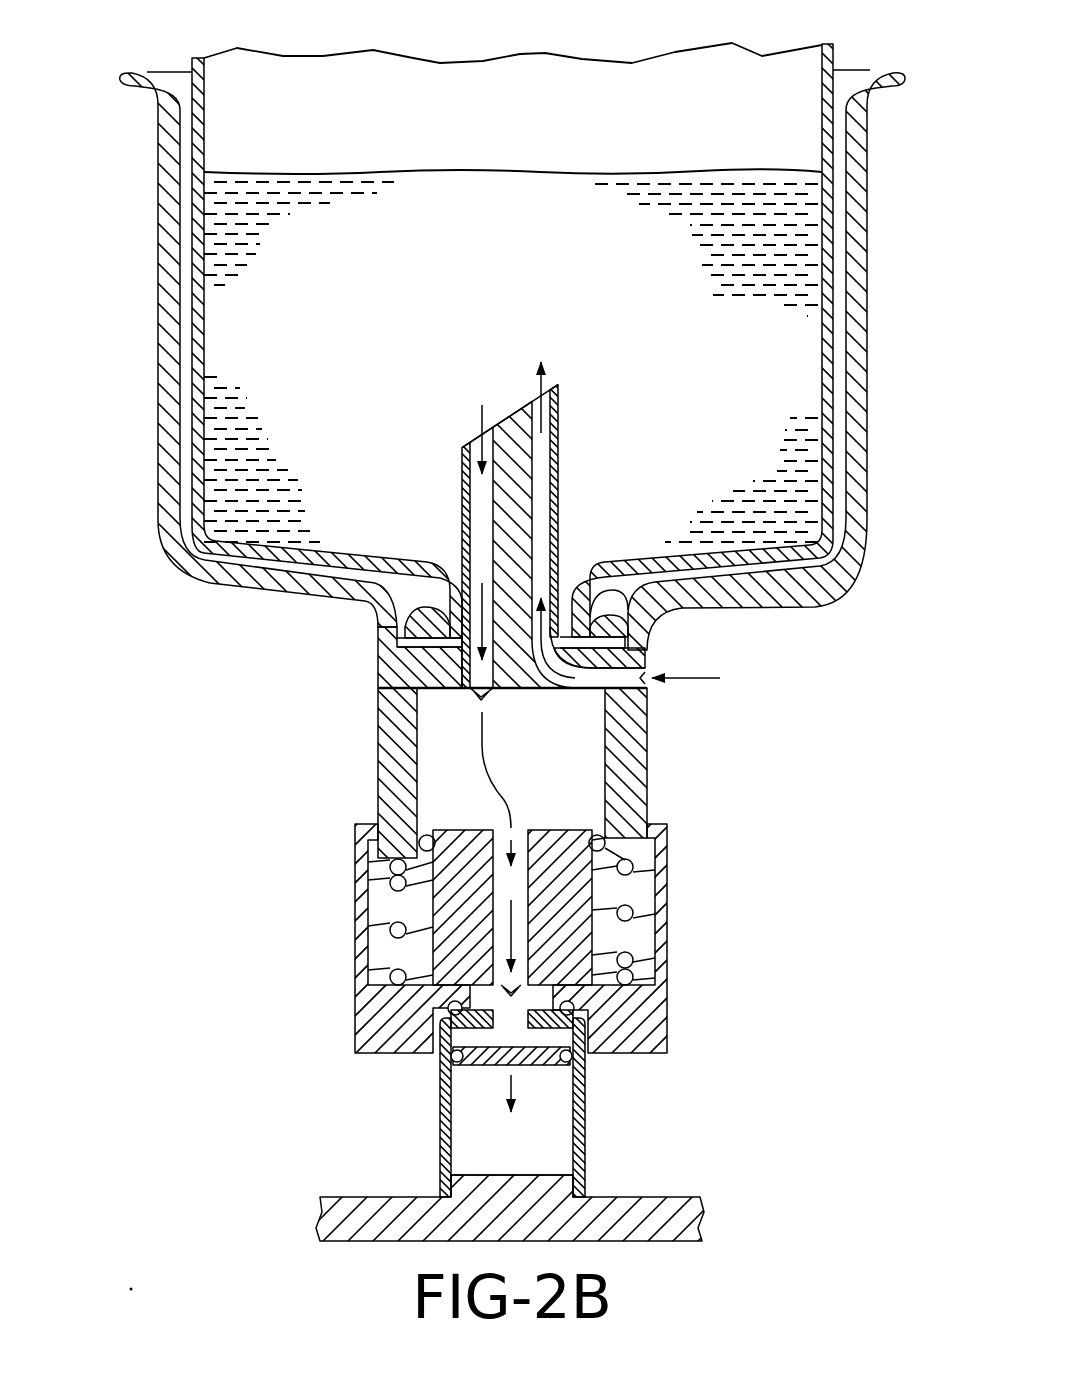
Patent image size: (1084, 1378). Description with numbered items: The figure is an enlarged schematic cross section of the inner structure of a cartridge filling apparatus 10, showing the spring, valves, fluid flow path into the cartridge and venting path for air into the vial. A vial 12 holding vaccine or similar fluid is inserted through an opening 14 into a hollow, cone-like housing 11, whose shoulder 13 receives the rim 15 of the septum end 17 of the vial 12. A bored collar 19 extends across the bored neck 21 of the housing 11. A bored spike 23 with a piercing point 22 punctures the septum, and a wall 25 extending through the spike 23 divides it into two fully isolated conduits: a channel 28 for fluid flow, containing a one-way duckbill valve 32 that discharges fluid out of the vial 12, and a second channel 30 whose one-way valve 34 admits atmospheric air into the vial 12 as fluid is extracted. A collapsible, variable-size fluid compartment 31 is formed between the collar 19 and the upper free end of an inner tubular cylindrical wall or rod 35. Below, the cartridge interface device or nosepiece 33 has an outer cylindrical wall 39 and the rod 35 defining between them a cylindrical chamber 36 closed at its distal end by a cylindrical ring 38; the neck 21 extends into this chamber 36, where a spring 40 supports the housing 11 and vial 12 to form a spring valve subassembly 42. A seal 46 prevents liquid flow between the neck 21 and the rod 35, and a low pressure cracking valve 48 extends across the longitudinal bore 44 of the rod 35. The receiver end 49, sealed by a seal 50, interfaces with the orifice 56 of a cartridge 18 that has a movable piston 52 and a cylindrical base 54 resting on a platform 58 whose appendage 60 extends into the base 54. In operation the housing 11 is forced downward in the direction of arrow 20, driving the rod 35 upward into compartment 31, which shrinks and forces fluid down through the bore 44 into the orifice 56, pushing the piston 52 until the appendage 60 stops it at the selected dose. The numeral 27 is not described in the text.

The cartridge filling apparatus 10 is at (112, 240).
The housing 11 is at (875, 395).
The vial 12 is at (842, 210).
The shoulder 13 is at (420, 640).
The opening 14 is at (842, 88).
The rim 15 is at (640, 632).
The septum end 17 is at (655, 656).
The cartridge 18 is at (595, 1143).
The bored collar 19 is at (417, 715).
The direction arrow 20 is at (125, 875).
The bored neck 21 is at (650, 742).
The piercing point 22 is at (558, 385).
The bored spike 23 is at (570, 405).
The wall 25 is at (513, 417).
The spring chamber 27 is at (366, 868).
The channel 28 is at (482, 545).
The second channel 30 is at (540, 507).
The fluid compartment 31 is at (583, 792).
The one-way valve 32 is at (490, 697).
The cartridge interface device 33 is at (675, 847).
The one-way valve 34 is at (655, 692).
The inner tubular cylindrical wall 35 is at (453, 945).
The cylindrical chamber 36 is at (388, 950).
The cylindrical ring 38 is at (643, 1018).
The outer cylindrical wall 39 is at (668, 955).
The spring 40 is at (632, 912).
The spring valve subassembly 42 is at (645, 968).
The longitudinal bore 44 is at (520, 902).
The seal 46 is at (420, 840).
The low pressure cracking valve 48 is at (425, 985).
The receiver end 49 is at (583, 1012).
The seal 50 is at (452, 1012).
The cartridge piston 52 is at (490, 1063).
The cylindrical base 54 is at (585, 1185).
The orifice 56 is at (510, 1015).
The platform 58 is at (360, 1197).
The appendage 60 is at (483, 1172).